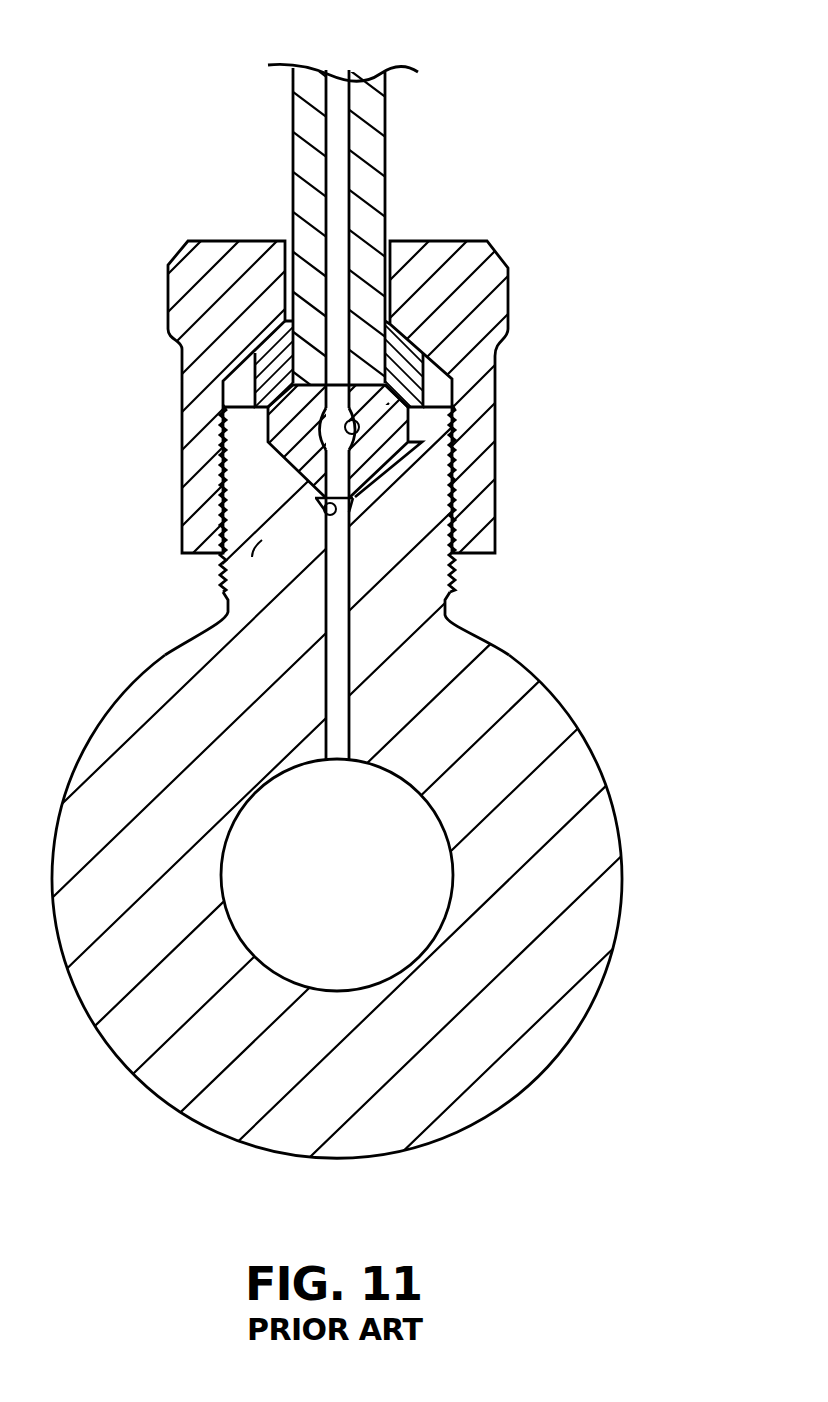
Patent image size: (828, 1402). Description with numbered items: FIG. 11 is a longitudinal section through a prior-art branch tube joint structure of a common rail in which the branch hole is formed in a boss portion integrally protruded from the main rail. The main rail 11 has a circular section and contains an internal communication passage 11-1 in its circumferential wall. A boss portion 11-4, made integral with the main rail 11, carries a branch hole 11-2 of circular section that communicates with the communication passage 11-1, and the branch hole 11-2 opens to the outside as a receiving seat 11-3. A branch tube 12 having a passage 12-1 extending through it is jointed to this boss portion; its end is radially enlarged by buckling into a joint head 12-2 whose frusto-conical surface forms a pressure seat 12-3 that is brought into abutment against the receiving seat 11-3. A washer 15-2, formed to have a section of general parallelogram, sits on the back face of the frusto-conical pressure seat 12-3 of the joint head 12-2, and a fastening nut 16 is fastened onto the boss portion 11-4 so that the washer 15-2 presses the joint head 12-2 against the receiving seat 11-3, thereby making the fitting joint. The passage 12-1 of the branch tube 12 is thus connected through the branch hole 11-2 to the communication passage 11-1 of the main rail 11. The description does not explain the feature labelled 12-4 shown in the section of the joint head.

The main rail 11 is at (585, 921).
The internal communication passage 11-1 is at (453, 860).
The branch hole 11-2 is at (337, 764).
The receiving seat 11-3 is at (324, 514).
The boss portion 11-4 is at (225, 586).
The branch tube 12 is at (368, 141).
The passage 12-1 is at (342, 80).
The joint head 12-2 is at (268, 442).
The pressure seat 12-3 is at (416, 464).
The cavity 12-4 is at (356, 420).
The washer 15-2 is at (254, 381).
The fastening nut 16 is at (486, 290).